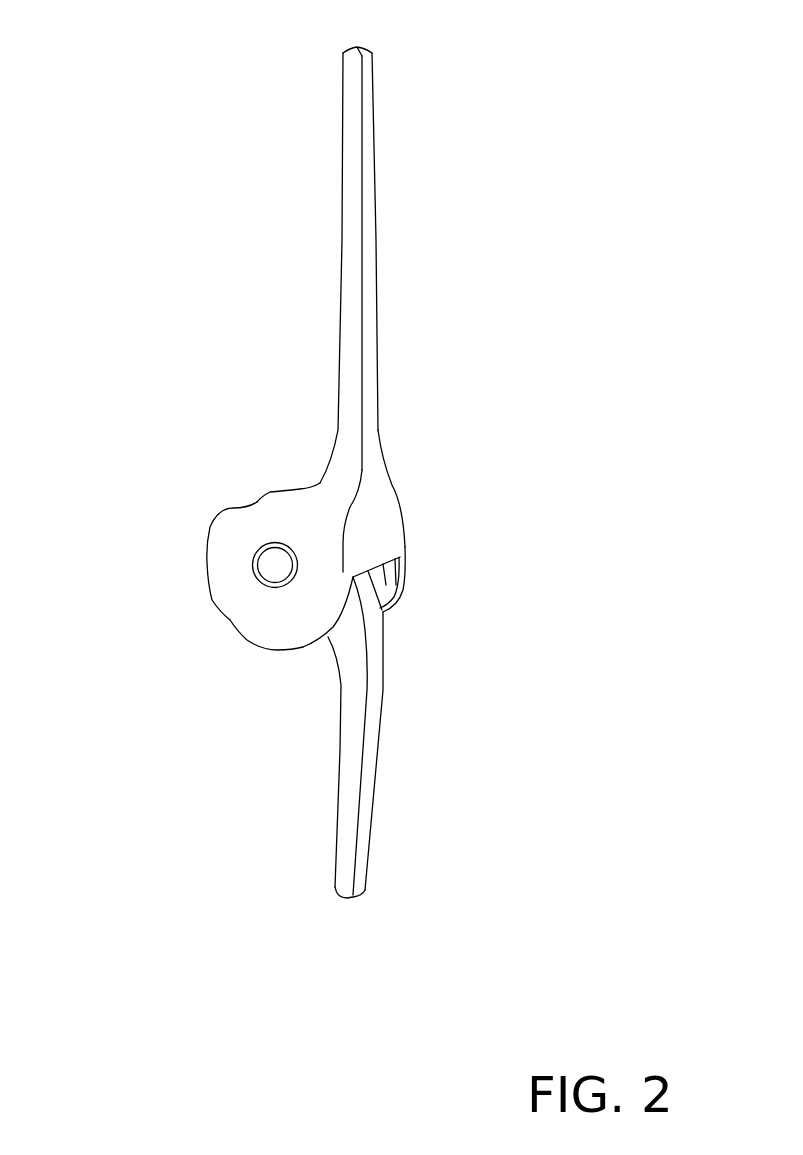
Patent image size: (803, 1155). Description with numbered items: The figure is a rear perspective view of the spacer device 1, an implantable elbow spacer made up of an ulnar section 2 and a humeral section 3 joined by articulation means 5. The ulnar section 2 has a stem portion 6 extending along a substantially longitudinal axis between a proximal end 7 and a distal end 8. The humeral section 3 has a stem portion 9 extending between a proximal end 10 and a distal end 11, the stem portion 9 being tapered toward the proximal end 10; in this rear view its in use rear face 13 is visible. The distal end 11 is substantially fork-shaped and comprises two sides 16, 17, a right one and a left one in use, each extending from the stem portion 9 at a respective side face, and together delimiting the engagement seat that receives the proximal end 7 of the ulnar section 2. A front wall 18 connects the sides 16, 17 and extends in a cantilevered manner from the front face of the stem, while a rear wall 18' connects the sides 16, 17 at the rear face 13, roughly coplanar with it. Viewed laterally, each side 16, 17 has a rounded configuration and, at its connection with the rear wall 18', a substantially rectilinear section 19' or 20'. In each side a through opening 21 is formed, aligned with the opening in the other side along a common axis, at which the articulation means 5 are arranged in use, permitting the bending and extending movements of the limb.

The spacer device 1 is at (218, 89).
The ulnar section 2 is at (387, 820).
The humeral section 3 is at (313, 262).
The articulation means 5 is at (276, 559).
The stem portion 6 is at (347, 790).
The proximal end 7 is at (343, 632).
The distal end 8 is at (343, 892).
The stem portion 9 is at (368, 205).
The proximal end 10 is at (372, 58).
The distal end 11 is at (181, 526).
The rear face 13 is at (376, 312).
The side 16 is at (260, 622).
The side 17 is at (400, 593).
The front wall 18 is at (285, 436).
The rear wall 18' is at (461, 583).
The second rectilinear section 19' is at (430, 490).
The second rectilinear section 20' is at (464, 488).
The through opening 21 is at (258, 580).